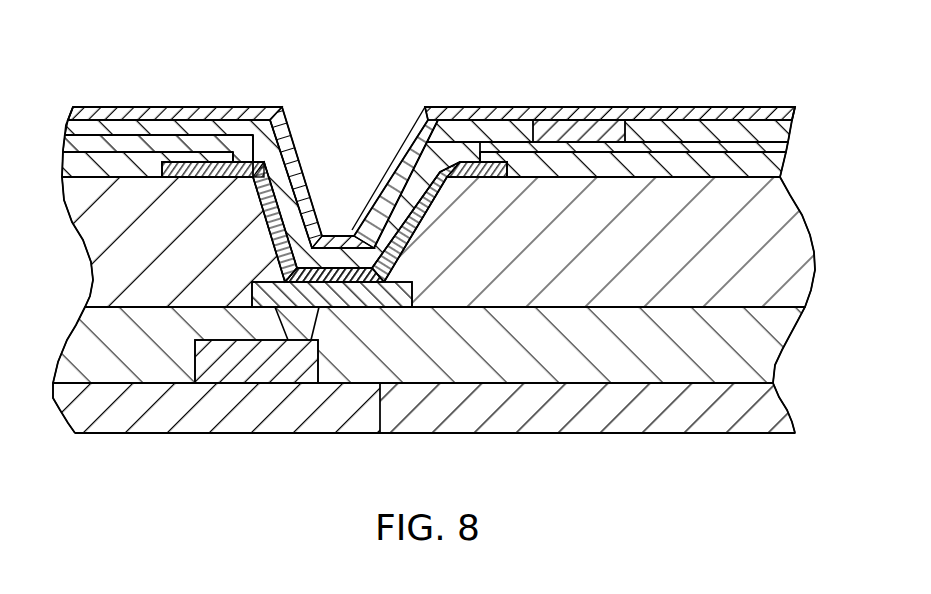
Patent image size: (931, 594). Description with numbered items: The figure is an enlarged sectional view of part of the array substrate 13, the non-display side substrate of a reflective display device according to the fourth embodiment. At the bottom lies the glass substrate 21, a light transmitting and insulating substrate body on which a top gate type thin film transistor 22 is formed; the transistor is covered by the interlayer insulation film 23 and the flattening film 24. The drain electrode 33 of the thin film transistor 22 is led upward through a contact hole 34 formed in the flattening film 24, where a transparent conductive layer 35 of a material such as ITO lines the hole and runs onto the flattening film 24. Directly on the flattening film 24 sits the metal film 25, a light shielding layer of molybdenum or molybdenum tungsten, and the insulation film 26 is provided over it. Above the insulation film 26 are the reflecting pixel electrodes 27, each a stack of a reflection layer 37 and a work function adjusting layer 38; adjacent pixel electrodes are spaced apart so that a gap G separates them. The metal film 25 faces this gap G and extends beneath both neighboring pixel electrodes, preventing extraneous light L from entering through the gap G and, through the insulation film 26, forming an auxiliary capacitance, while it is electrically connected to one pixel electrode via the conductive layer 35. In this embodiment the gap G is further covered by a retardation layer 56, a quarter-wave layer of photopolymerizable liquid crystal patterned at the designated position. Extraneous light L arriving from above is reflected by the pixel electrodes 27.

The array substrate 13 is at (481, 81).
The glass substrate 21 is at (770, 410).
The thin film transistor 22 is at (283, 365).
The interlayer insulation film 23 is at (770, 353).
The flattening film 24 is at (782, 218).
The metal film 25 is at (747, 170).
The insulation film 26 is at (715, 148).
The pixel electrode 27 is at (457, 158).
The drain electrode 33 is at (380, 297).
The contact hole 34 is at (283, 272).
The conductive layer 35 is at (465, 167).
The reflection layer 37 is at (782, 133).
The work function adjusting layer 38 is at (793, 112).
The retardation layer 56 is at (540, 118).
The gap G is at (621, 119).
The extraneous light L is at (142, 118).